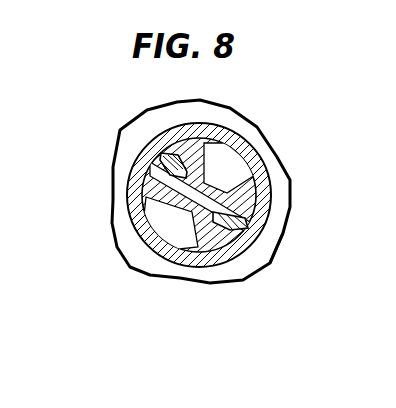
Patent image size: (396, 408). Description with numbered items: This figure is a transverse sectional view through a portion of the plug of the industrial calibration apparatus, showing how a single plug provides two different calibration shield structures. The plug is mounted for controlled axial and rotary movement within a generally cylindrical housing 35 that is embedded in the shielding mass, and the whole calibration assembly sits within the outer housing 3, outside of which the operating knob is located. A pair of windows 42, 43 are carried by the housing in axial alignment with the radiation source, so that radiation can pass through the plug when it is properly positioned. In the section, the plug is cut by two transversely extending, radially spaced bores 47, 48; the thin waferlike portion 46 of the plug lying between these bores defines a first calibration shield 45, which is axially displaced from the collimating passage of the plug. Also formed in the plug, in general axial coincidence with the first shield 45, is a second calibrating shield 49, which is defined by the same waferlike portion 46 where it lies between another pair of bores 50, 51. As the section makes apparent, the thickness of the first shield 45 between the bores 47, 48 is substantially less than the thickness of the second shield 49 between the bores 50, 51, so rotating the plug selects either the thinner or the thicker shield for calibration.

The housing 3 is at (243, 127).
The cylindrical housing 35 is at (187, 127).
The window 42 is at (145, 170).
The window 43 is at (272, 168).
The first calibration shield 45 is at (137, 221).
The waferlike portion 46 is at (272, 190).
The bore 47 is at (262, 157).
The bore 48 is at (172, 233).
The second calibrating shield 49 is at (272, 222).
The bore 50 is at (130, 150).
The bore 51 is at (270, 247).